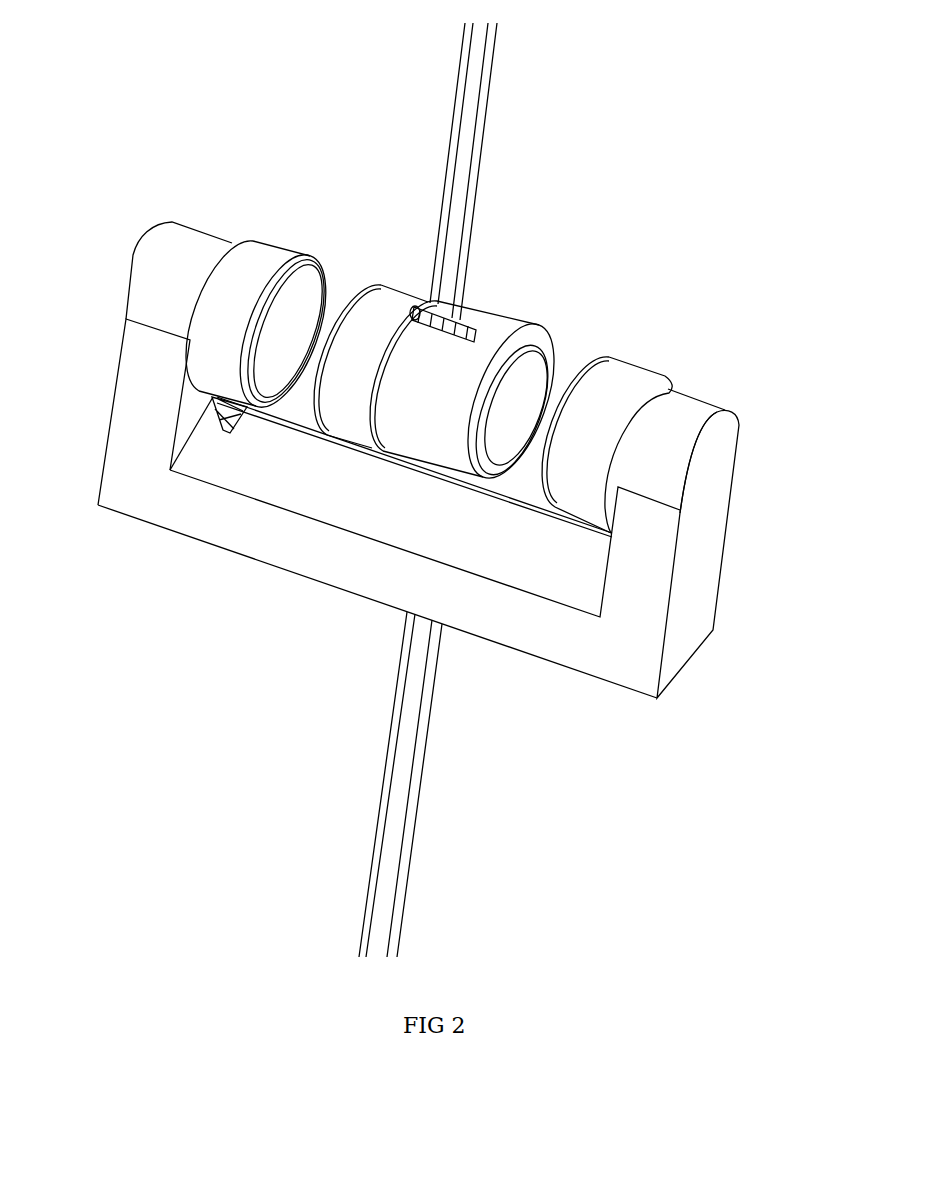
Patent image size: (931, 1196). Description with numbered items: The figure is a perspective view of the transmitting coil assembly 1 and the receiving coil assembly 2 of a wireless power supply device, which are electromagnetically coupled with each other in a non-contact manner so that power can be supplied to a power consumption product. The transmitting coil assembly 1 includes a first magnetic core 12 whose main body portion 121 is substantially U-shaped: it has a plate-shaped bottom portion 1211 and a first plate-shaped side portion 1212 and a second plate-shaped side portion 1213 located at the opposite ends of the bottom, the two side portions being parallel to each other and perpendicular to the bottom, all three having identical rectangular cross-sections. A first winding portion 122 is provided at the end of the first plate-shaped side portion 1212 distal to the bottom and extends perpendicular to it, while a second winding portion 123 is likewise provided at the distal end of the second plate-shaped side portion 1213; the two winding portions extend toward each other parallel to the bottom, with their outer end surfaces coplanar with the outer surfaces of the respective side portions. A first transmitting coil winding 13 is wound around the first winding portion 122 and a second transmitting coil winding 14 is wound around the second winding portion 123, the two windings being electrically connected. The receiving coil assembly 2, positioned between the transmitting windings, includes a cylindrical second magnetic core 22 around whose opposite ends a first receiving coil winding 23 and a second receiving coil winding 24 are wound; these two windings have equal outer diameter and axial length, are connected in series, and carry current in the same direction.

The transmitting coil assembly 1 is at (436, 431).
The first magnetic core 12 is at (436, 509).
The main body portion 121 is at (370, 575).
The plate-shaped bottom portion 1211 is at (518, 620).
The first plate-shaped side portion 1212 is at (134, 415).
The second plate-shaped side portion 1213 is at (697, 552).
The first winding portion 122 is at (173, 263).
The second winding portion 123 is at (697, 427).
The first transmitting coil winding 13 is at (263, 262).
The second transmitting coil winding 14 is at (627, 387).
The receiving coil assembly 2 is at (422, 352).
The second magnetic core 22 is at (533, 400).
The first receiving coil winding 23 is at (360, 308).
The second receiving coil winding 24 is at (485, 355).